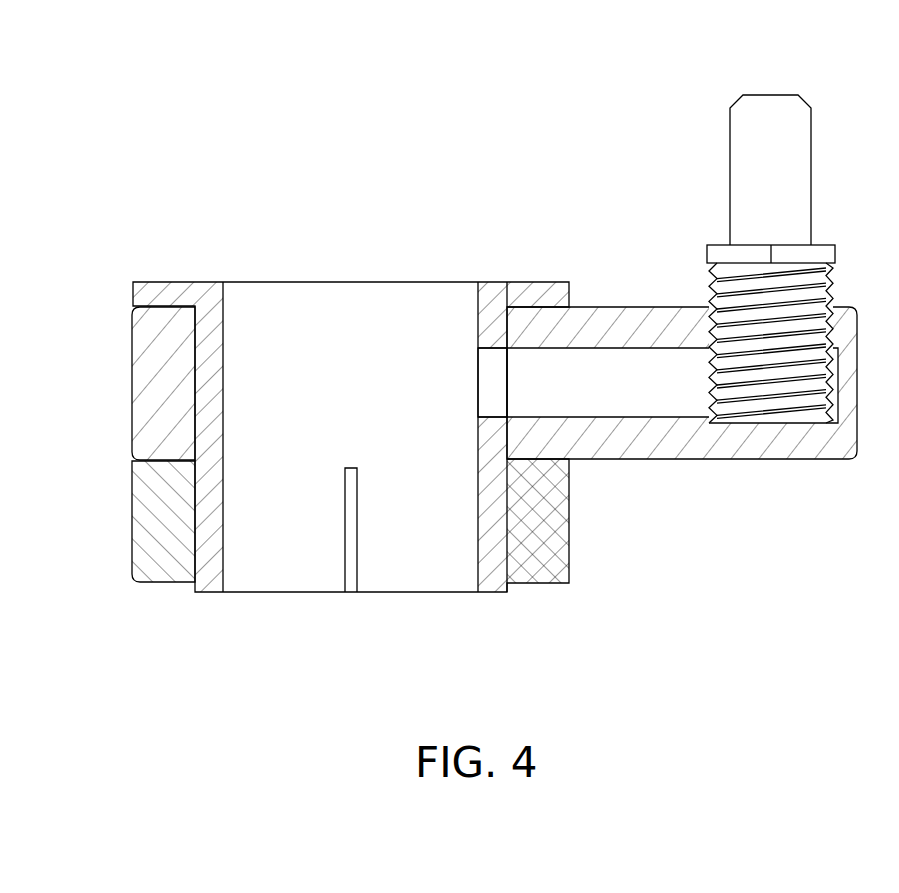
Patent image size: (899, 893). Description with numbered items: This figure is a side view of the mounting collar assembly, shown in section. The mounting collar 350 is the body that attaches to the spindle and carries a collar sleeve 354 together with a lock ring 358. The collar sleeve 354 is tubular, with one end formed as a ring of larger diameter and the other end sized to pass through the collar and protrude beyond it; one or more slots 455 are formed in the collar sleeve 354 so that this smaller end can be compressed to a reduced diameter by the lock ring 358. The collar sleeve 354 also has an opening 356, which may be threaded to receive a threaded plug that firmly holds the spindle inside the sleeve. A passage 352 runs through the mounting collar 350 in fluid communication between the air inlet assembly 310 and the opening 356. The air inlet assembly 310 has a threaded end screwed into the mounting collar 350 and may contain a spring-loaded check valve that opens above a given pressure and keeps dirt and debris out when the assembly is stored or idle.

The air inlet assembly 310 is at (770, 93).
The mounting collar 350 is at (690, 462).
The passage 352 is at (645, 368).
The collar sleeve 354 is at (133, 295).
The opening 356 is at (491, 348).
The lock ring 358 is at (133, 502).
The slot 455 is at (351, 593).